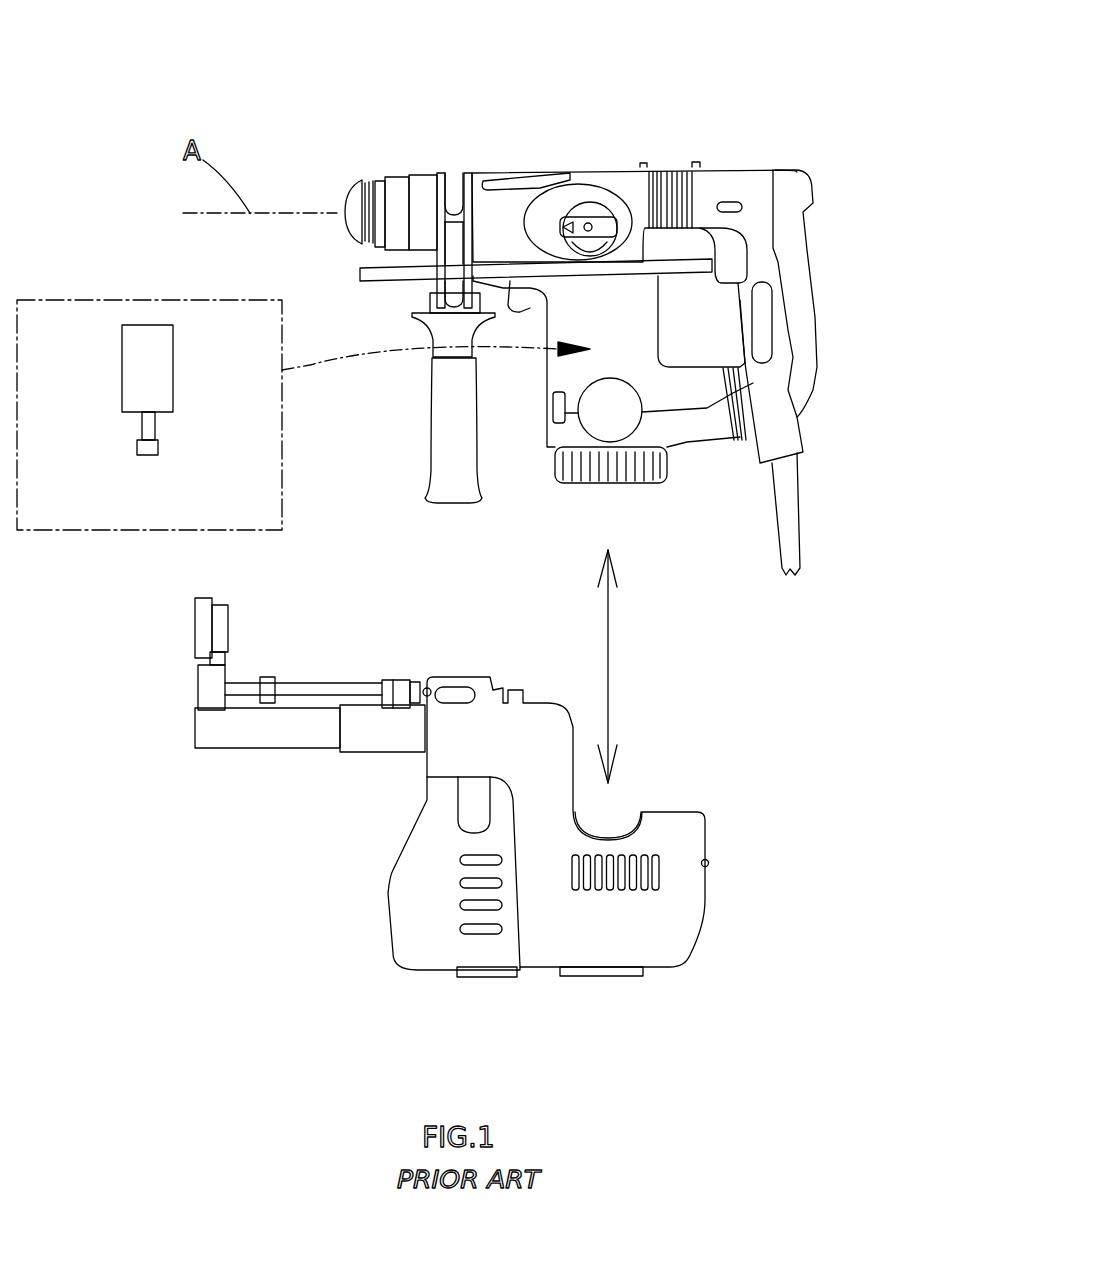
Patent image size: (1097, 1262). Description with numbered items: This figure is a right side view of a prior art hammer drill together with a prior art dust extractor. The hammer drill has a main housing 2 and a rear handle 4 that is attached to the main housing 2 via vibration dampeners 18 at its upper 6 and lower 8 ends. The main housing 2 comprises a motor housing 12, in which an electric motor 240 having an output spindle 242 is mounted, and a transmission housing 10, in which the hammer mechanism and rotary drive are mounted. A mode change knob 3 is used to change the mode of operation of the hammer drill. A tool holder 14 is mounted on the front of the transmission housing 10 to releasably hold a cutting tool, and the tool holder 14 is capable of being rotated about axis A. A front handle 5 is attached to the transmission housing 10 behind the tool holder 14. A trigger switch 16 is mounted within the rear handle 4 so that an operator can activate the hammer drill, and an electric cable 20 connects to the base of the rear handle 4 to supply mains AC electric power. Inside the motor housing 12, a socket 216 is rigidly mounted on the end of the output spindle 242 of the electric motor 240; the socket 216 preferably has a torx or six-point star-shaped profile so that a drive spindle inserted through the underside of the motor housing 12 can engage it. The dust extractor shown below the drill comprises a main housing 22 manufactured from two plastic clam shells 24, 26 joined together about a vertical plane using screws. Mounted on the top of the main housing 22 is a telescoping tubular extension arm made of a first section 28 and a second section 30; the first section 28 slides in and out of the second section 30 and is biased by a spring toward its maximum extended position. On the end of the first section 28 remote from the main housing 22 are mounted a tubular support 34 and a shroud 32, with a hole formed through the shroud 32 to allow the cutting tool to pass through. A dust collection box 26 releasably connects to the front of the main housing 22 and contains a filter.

The main housing 2 is at (535, 95).
The mode change knob 3 is at (507, 158).
The rear handle 4 is at (757, 258).
The front handle 5 is at (468, 432).
The upper end 6 is at (737, 182).
The lower end 8 is at (760, 380).
The transmission housing 10 is at (597, 160).
The motor housing 12 is at (555, 380).
The tool holder 14 is at (352, 188).
The trigger switch 16 is at (730, 283).
The vibration dampeners 18 is at (667, 160).
The electric cable 20 is at (788, 518).
The main housing 22 is at (634, 1010).
The clam shell 24 is at (685, 905).
The clam shell / dust collection box 26 is at (640, 807).
The first section 28 is at (290, 737).
The second section 30 is at (375, 737).
The shroud 32 is at (205, 632).
The tubular support 34 is at (210, 697).
The socket 216 is at (153, 450).
The electric motor 240 is at (137, 367).
The output spindle 242 is at (142, 423).